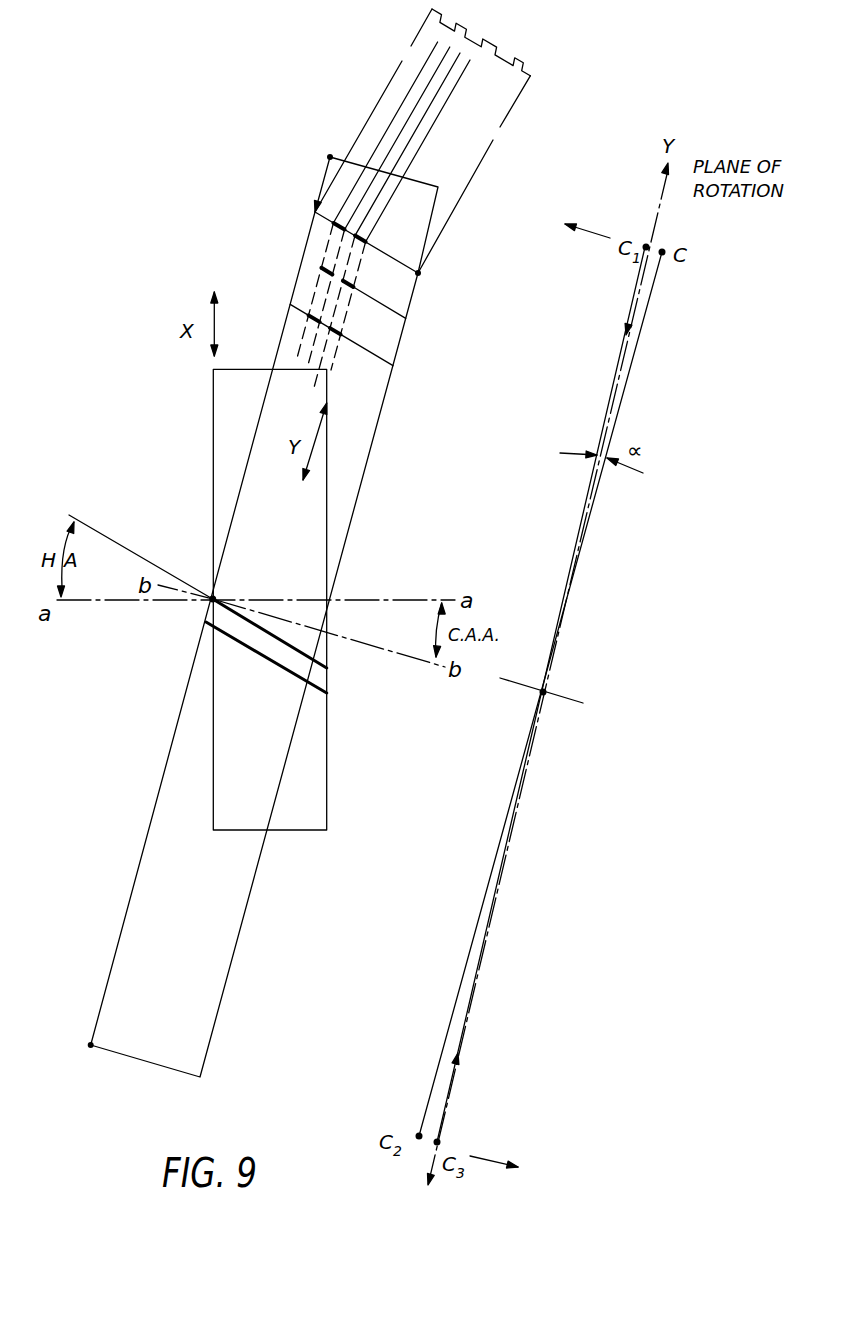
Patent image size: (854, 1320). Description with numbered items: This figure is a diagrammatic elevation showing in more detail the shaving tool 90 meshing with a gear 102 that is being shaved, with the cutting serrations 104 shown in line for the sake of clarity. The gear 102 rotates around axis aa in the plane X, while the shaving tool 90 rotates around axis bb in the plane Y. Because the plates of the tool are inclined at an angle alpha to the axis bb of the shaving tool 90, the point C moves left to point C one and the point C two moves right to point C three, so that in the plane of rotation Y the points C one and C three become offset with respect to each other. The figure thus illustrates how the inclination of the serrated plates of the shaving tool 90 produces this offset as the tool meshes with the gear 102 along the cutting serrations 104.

The shaving tool 90 is at (356, 509).
The gear 102 is at (213, 446).
The cutting serrations 104 is at (477, 42).